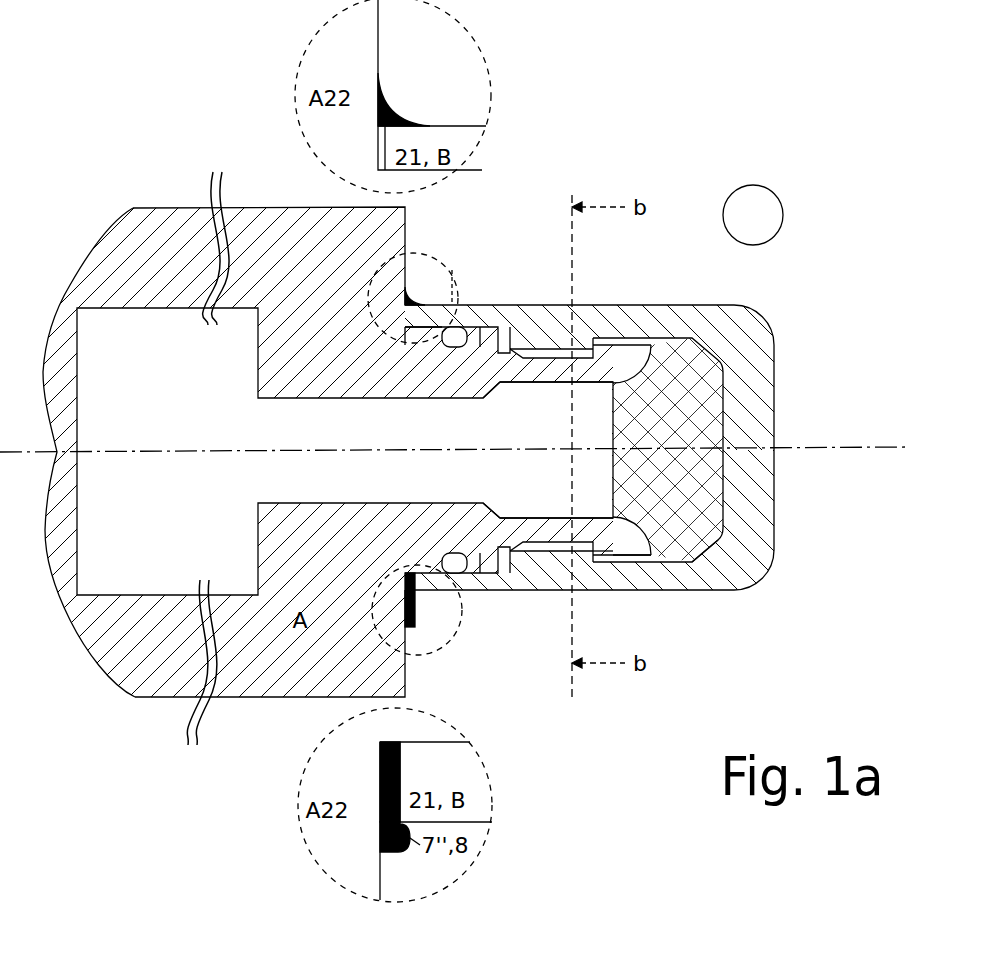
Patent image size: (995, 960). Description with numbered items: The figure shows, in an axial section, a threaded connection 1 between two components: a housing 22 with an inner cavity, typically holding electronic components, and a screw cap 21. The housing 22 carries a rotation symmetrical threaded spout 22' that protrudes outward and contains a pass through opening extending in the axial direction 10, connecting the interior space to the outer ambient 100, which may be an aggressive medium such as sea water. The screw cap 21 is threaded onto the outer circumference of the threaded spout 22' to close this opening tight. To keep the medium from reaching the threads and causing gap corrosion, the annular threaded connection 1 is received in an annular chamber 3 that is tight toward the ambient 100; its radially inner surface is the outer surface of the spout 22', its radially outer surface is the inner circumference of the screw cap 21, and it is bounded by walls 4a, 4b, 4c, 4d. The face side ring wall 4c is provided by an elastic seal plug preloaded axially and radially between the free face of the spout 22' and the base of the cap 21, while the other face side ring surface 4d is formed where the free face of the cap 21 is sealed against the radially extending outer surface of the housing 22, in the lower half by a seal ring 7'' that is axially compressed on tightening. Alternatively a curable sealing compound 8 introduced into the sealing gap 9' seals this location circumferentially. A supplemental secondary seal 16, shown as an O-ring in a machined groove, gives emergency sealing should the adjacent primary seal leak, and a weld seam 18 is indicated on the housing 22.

The threaded connection 1 is at (543, 540).
The chamber 3 is at (606, 560).
The wall 4a is at (641, 560).
The wall 4b is at (604, 548).
The face side ring wall 4c is at (735, 548).
The face side ring surface 4d is at (404, 352).
The seal ring 7'' is at (564, 481).
The sealing compound 8 is at (420, 292).
The sealing gap 9' is at (378, 117).
The axial direction 10 is at (789, 449).
The secondary seal 16 is at (444, 560).
The weld seam 18 is at (400, 322).
The screw cap 21 is at (773, 342).
The housing 22 is at (347, 458).
The threaded spout 22' is at (497, 450).
The outer ambient 100 is at (753, 215).